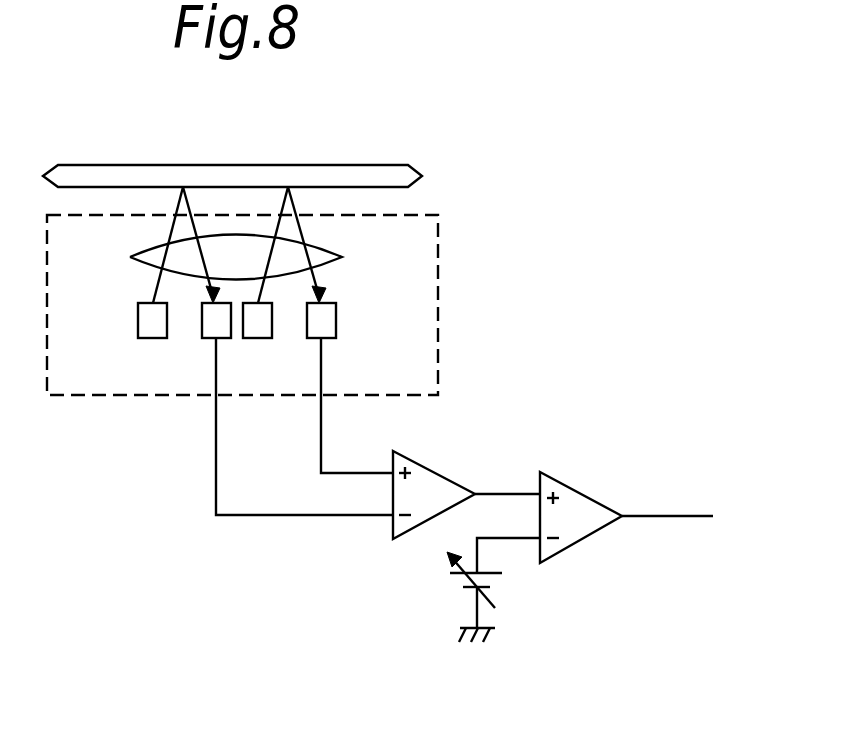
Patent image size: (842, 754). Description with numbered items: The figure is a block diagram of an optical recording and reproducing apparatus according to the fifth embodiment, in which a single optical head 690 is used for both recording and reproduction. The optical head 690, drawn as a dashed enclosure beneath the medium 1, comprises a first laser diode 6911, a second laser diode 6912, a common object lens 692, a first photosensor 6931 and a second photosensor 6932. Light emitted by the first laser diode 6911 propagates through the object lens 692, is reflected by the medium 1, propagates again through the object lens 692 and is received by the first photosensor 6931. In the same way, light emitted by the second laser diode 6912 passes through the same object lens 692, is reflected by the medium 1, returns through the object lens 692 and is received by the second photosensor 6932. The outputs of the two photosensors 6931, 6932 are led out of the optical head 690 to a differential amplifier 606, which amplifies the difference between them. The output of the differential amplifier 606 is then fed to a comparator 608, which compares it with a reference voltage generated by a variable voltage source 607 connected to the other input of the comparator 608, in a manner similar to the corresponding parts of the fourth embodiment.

The medium 1 is at (362, 164).
The optical head 690 is at (438, 262).
The object lens 692 is at (323, 241).
The first laser diode 6911 is at (138, 318).
The second laser diode 6912 is at (272, 318).
The first photosensor 6931 is at (202, 318).
The second photosensor 6932 is at (336, 318).
The differential amplifier 606 is at (452, 479).
The variable voltage source 607 is at (502, 583).
The comparator 608 is at (590, 496).